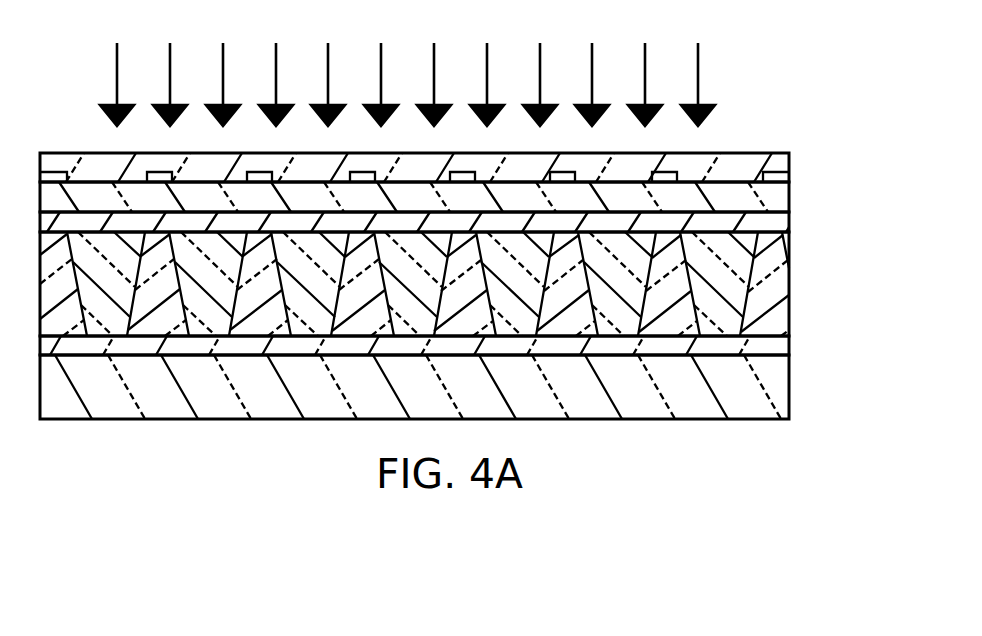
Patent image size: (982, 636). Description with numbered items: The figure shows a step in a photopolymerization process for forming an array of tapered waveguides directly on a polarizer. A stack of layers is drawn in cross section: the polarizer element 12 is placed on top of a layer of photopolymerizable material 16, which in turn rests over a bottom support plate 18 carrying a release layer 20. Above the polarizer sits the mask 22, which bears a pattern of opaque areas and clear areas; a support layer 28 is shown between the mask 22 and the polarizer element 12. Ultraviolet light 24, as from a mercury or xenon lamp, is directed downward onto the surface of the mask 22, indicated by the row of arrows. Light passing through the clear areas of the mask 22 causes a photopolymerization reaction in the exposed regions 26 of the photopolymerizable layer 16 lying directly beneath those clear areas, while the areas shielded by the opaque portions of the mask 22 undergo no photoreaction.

The polarizer element 12 is at (780, 231).
The layer of photopolymerizable material 16 is at (773, 280).
The bottom support plate 18 is at (773, 402).
The release layer 20 is at (777, 347).
The mask 22 is at (775, 163).
The ultraviolet light 24 is at (698, 78).
The exposed regions 26 is at (103, 257).
The support layer 28 is at (777, 200).